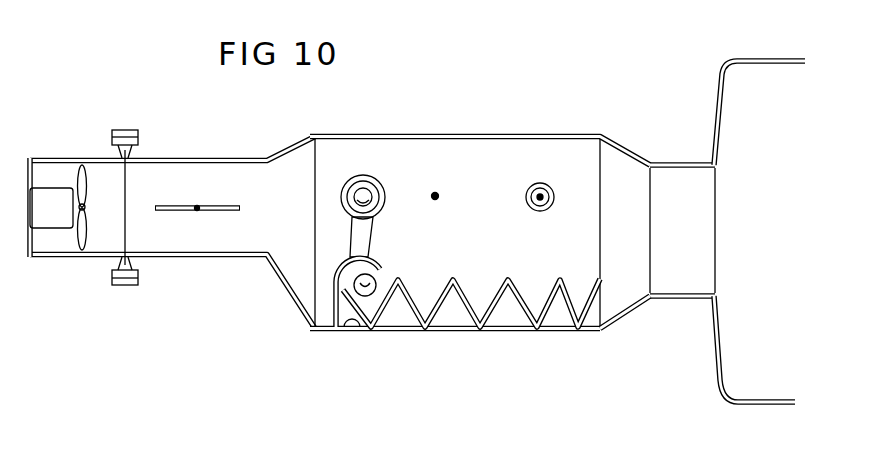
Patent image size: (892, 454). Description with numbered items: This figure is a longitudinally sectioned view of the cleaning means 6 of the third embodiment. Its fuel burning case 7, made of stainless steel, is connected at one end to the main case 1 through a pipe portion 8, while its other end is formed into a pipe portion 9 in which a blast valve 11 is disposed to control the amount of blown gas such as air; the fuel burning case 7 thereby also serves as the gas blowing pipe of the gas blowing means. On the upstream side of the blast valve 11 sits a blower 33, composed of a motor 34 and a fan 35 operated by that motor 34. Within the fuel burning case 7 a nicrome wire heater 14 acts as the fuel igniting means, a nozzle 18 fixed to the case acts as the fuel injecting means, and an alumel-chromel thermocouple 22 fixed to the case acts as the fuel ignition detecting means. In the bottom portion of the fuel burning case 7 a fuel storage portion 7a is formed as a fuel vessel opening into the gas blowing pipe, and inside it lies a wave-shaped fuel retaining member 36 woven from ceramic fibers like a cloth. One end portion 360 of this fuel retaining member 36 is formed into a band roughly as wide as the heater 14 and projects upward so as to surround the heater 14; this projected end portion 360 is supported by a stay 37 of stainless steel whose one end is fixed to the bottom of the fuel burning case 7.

The main case 1 is at (752, 60).
The cleaning means 6 is at (606, 337).
The fuel burning case 7 is at (500, 134).
The fuel storage portion 7a is at (457, 333).
The pipe portion 8 is at (673, 162).
The pipe portion 9 is at (238, 158).
The blast valve 11 is at (195, 210).
The nicrome wire heater 14 is at (348, 232).
The nozzle 18 is at (540, 183).
The alumel-chromel thermocouple 22 is at (435, 192).
The blower 33 is at (49, 174).
The motor 34 is at (52, 214).
The fan 35 is at (85, 170).
The wave-shaped fuel retaining member 36 is at (511, 306).
The stay 37 is at (333, 284).
The end portion of the fuel retaining member 360 is at (350, 333).